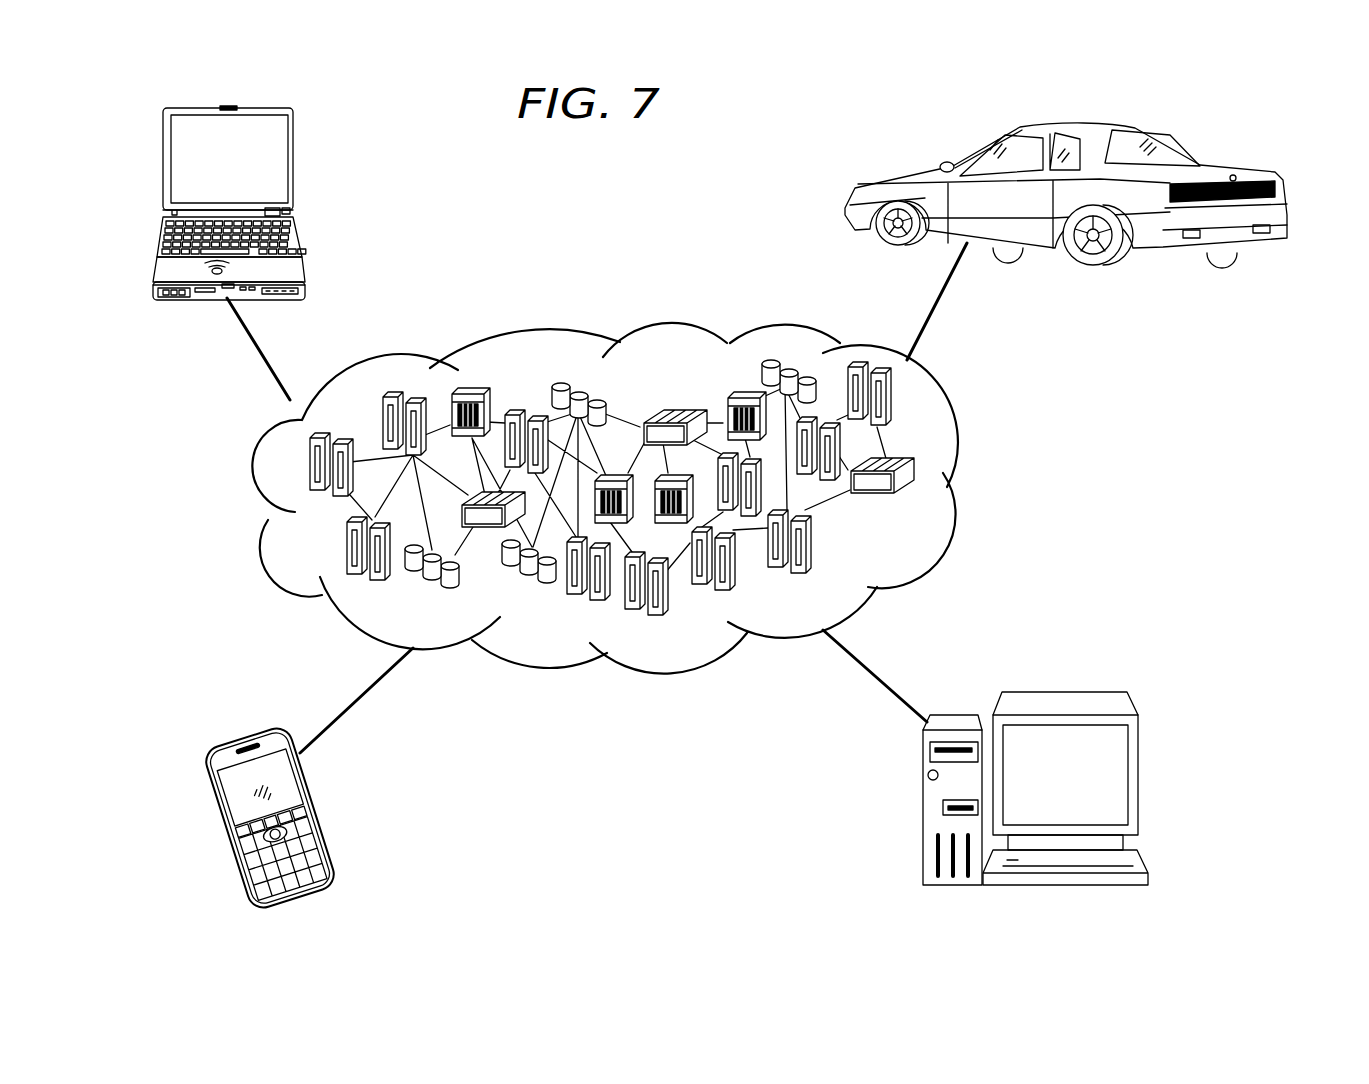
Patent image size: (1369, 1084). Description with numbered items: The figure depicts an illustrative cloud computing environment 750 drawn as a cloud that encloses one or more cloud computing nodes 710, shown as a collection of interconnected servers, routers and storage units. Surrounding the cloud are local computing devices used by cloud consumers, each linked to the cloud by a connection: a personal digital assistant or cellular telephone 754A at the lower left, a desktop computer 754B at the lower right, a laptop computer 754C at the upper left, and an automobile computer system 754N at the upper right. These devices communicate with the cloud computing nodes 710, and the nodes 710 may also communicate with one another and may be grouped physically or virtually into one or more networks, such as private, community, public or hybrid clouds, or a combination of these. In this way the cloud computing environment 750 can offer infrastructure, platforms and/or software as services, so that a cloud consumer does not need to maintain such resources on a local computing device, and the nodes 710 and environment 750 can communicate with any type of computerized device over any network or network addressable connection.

The cloud computing nodes 710 is at (915, 503).
The cloud computing environment 750 is at (963, 420).
The personal digital assistant (PDA) or cellular telephone 754A is at (212, 802).
The desktop computer 754B is at (1063, 690).
The laptop computer 754C is at (163, 152).
The automobile computer system 754N is at (1243, 168).